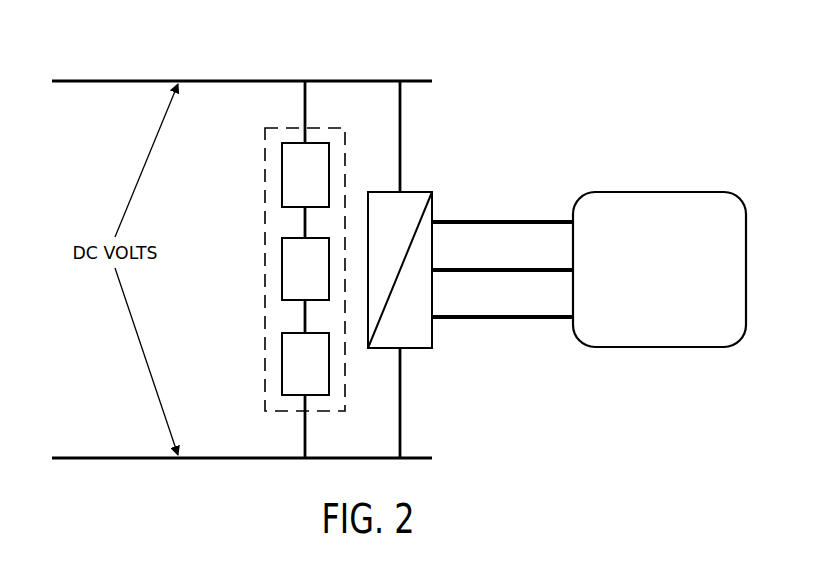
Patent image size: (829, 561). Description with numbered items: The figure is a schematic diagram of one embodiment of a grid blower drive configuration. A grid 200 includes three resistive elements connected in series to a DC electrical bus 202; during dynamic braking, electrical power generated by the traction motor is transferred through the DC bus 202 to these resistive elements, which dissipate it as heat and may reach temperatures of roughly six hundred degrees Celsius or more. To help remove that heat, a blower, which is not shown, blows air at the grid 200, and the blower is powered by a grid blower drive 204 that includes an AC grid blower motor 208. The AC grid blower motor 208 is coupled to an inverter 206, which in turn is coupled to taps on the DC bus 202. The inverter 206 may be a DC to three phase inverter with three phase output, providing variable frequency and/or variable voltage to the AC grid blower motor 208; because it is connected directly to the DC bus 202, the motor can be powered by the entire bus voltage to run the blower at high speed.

The grid 200 is at (265, 241).
The DC electrical bus 202 is at (86, 80).
The grid blower drive 204 is at (596, 114).
The inverter 206 is at (417, 190).
The AC grid blower motor 208 is at (658, 190).